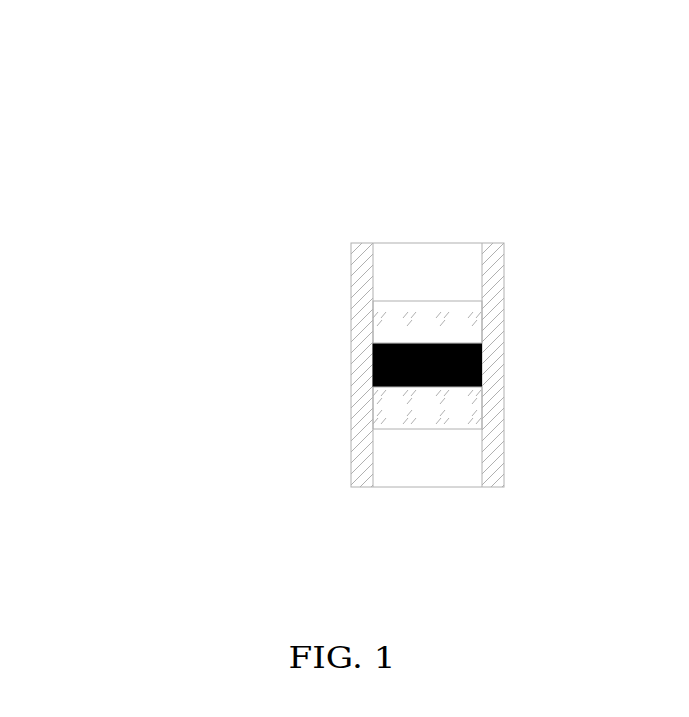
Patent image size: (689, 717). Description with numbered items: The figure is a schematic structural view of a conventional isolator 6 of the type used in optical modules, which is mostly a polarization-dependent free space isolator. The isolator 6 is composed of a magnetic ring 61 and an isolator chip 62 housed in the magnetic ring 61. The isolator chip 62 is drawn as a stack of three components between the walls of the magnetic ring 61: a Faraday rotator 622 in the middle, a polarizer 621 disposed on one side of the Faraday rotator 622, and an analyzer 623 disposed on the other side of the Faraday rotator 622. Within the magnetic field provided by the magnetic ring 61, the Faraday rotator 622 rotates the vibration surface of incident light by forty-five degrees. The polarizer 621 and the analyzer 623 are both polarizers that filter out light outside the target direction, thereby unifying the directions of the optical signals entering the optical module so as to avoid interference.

The isolator 6 is at (132, 354).
The magnetic ring 61 is at (492, 257).
The isolator chip 62 is at (230, 207).
The polarizer 621 is at (445, 413).
The Faraday rotator 622 is at (372, 363).
The analyzer 623 is at (448, 315).